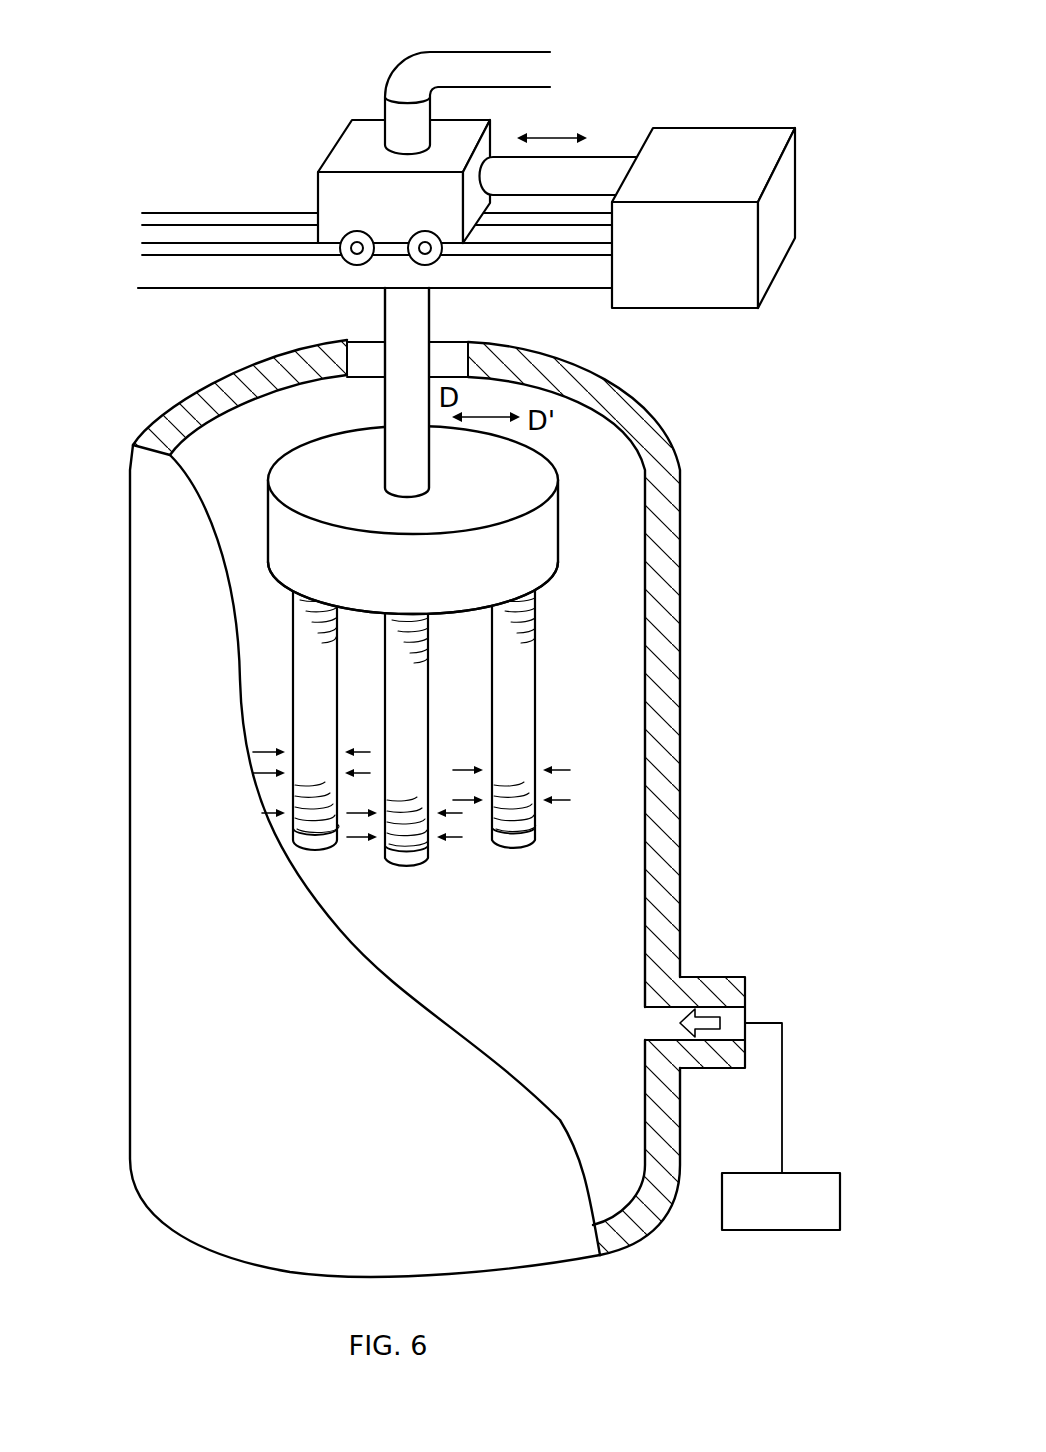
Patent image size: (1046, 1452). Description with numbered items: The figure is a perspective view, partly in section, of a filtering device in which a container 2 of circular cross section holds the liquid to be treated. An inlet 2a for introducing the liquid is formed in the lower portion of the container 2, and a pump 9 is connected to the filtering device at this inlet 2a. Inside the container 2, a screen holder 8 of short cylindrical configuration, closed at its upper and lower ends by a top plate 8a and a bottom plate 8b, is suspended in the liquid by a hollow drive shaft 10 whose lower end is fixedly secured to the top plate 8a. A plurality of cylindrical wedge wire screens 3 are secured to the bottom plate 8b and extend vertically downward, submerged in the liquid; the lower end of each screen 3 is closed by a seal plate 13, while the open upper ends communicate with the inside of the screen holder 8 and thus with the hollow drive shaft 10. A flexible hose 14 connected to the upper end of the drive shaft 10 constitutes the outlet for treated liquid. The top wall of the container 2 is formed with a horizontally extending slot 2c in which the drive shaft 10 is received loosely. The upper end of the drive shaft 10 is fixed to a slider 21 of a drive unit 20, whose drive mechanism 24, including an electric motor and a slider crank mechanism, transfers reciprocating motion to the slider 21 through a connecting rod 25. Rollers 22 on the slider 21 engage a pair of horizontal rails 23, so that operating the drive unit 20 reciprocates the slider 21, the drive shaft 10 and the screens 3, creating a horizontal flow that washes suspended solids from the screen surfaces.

The container 2 is at (670, 490).
The inlet 2a is at (717, 993).
The slot 2c is at (460, 362).
The cylindrical wedge wire screens 3 is at (527, 713).
The screen holder 8 is at (499, 579).
The top plate 8a is at (503, 490).
The bottom plate 8b is at (457, 617).
The pump 9 is at (812, 1173).
The hollow drive shaft 10 is at (402, 340).
The seal plates 13 is at (508, 853).
The flexible hose 14 is at (437, 72).
The drive unit 20 is at (452, 167).
The slider 21 is at (362, 137).
The rollers 22 is at (422, 230).
The horizontal rails 23 is at (203, 222).
The drive mechanism 24 is at (738, 153).
The connecting rod 25 is at (585, 170).